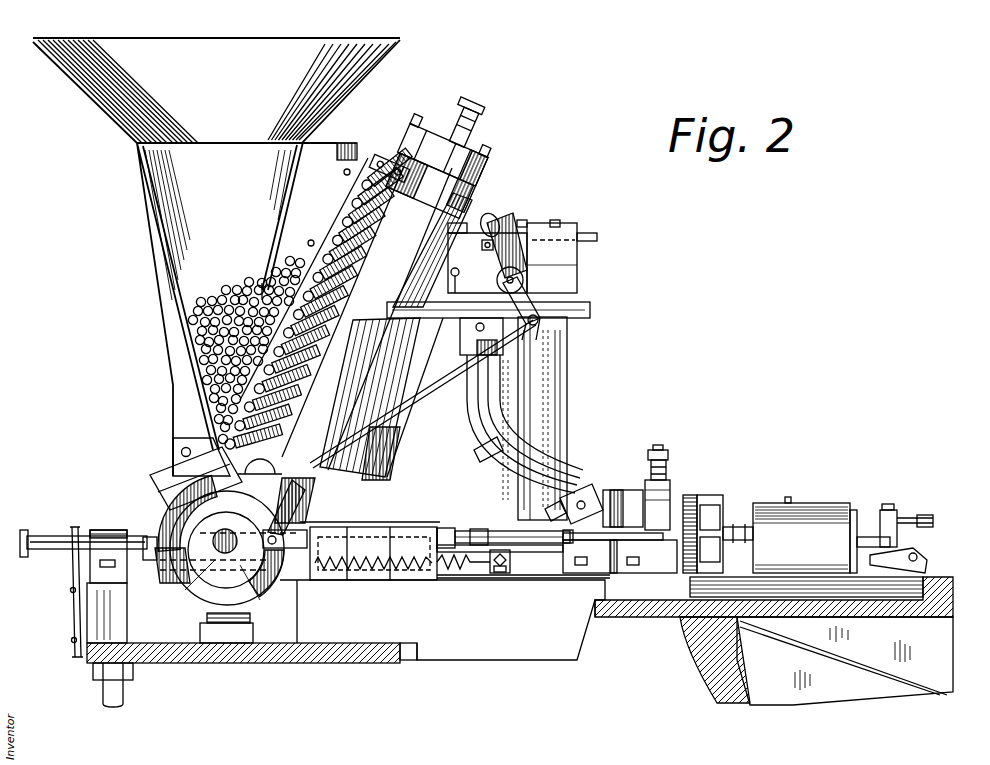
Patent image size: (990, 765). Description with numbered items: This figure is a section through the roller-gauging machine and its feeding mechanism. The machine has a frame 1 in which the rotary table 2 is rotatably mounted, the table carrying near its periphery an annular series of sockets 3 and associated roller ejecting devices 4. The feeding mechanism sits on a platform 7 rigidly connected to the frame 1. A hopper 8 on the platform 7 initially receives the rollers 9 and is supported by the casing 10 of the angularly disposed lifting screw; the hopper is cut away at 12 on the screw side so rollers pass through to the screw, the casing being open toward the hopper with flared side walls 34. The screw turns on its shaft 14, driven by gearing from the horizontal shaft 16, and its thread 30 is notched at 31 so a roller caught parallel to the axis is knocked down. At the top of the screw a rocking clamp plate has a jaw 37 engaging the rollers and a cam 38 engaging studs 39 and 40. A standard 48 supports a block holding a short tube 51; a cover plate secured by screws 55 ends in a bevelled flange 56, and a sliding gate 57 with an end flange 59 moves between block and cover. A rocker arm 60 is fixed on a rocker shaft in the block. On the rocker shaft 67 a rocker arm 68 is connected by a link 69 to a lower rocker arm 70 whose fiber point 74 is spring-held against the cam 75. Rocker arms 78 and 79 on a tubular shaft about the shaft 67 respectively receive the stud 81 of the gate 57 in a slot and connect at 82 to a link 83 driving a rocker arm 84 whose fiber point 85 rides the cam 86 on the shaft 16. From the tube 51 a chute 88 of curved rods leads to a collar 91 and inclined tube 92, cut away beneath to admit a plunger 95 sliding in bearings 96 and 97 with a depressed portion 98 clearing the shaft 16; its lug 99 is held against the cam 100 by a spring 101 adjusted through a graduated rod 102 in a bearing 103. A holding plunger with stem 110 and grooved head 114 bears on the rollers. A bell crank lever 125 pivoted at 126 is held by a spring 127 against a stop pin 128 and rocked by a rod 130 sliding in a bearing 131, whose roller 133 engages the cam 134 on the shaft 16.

The frame 1 is at (696, 650).
The rotary table 2 is at (862, 614).
The sockets 3 is at (686, 508).
The roller ejecting devices 4 is at (802, 503).
The platform 7 is at (392, 650).
The hopper 8 is at (152, 213).
The rollers 9 is at (237, 300).
The casing of the lifting screw 10 is at (370, 397).
The cut-away portion 12 is at (268, 272).
The shaft of the lifting screw 14 is at (464, 123).
The horizontal shaft 16 is at (222, 568).
The thread 30 is at (372, 256).
The notches 31 is at (310, 355).
The flared side walls 34 is at (329, 207).
The jaw 37 is at (390, 160).
The cam 38 is at (450, 193).
The stud 39 is at (435, 171).
The stud 40 is at (450, 136).
The standard 48 is at (563, 340).
The short tube 51 is at (487, 263).
The screws 55 is at (555, 222).
The bevelled flange 56 is at (500, 216).
The sliding gate 57 is at (598, 236).
The end flange 59 is at (512, 222).
The rocker arm 60 is at (476, 214).
The rocker shaft 67 is at (525, 265).
The rocker arm 68 is at (540, 286).
The link 69 is at (430, 394).
The lower rocker arm 70 is at (392, 517).
The fiber point 74 is at (162, 486).
The cam 75 is at (178, 525).
The rocker arm 78 is at (563, 237).
The rocker arm 79 is at (469, 280).
The stud 81 is at (525, 222).
The pivotal connection 82 is at (490, 216).
The link 83 is at (365, 401).
The rocker arm 84 is at (352, 503).
The fiber point 85 is at (268, 462).
The cam 86 is at (248, 620).
The chute 88 is at (468, 420).
The collar 91 is at (579, 487).
The inclined tube 92 is at (596, 482).
The plunger 95 is at (448, 524).
The bearing 96 is at (378, 582).
The bearing 97 is at (102, 528).
The depressed portion 98 is at (148, 560).
The lug 99 is at (132, 546).
The cam 100 is at (183, 576).
The spring 101 is at (466, 576).
The graduated rod 102 is at (548, 560).
The bearing 103 is at (496, 582).
The stem 110 is at (662, 450).
The head 114 is at (645, 520).
The bell crank lever 125 is at (620, 555).
The pivot 126 is at (542, 514).
The spring 127 is at (590, 560).
The stop pin 128 is at (620, 553).
The rod 130 is at (540, 545).
The bearing 131 is at (421, 582).
The roller 133 is at (262, 560).
The cam 134 is at (312, 584).